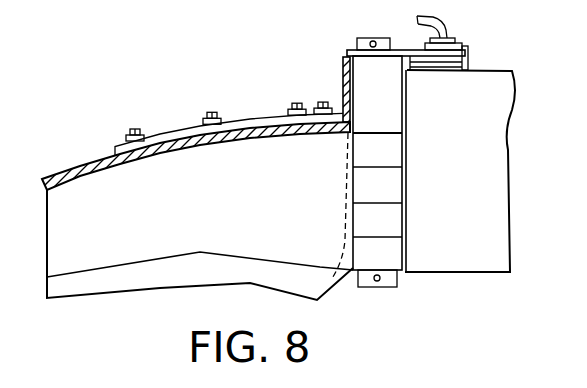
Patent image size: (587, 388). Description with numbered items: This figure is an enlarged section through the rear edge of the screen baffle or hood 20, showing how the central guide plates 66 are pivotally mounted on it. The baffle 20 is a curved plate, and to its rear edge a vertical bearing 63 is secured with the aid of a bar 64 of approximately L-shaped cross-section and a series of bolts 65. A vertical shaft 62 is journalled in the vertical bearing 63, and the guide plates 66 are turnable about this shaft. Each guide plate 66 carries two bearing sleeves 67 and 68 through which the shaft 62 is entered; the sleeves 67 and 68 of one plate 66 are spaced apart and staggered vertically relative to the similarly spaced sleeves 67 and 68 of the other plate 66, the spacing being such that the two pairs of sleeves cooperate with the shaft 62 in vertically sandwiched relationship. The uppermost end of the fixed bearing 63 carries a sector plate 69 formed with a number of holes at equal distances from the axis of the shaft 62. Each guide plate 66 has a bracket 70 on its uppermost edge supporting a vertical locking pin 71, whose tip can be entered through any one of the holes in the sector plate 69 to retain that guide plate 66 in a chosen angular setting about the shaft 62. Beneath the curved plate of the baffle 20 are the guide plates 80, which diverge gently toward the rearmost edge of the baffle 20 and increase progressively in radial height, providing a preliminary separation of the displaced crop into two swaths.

The screen baffle or hood 20 is at (82, 166).
The guide plates 80 is at (57, 232).
The vertical shaft 62 is at (365, 38).
The vertical bearing 63 is at (346, 70).
The bar 64 is at (343, 104).
The bolts 65 is at (322, 104).
The central guide plate 66 is at (500, 135).
The bearing sleeve 67 is at (397, 153).
The bearing sleeve 68 is at (398, 220).
The sector plate 69 is at (397, 50).
The bracket 70 is at (471, 46).
The vertical locking pin 71 is at (440, 16).